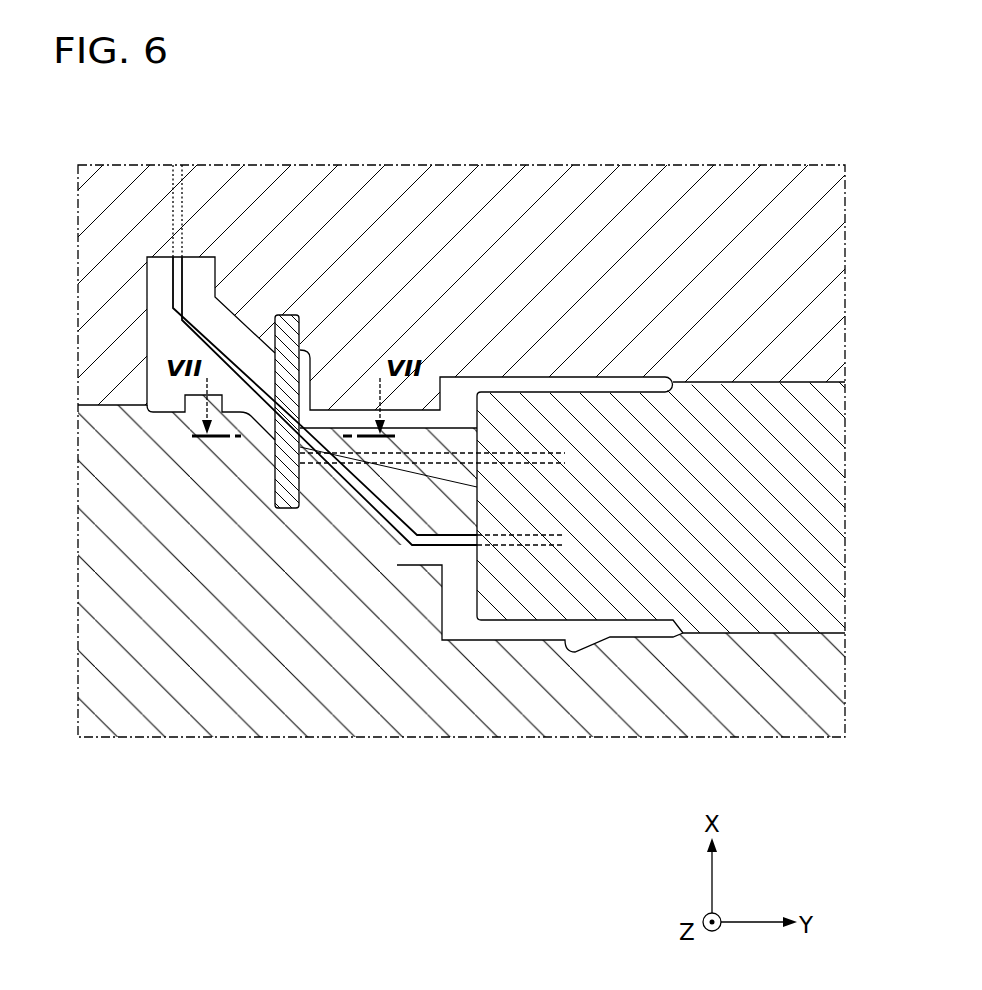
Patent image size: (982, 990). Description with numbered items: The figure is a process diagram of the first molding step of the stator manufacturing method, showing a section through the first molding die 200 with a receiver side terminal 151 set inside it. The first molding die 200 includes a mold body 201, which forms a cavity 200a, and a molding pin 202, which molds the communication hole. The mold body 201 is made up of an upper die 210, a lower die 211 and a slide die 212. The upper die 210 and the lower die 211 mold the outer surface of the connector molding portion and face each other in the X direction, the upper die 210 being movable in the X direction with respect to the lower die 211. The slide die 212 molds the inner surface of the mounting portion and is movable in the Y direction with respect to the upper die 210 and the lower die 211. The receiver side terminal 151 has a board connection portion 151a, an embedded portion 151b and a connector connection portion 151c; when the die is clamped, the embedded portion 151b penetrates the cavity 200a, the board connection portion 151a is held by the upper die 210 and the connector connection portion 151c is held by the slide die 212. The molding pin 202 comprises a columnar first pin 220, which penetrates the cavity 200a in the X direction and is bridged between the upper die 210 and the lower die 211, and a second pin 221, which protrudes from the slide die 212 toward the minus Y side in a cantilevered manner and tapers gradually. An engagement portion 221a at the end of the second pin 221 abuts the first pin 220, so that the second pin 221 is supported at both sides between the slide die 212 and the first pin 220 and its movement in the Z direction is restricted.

The receiver side terminal 151 is at (189, 284).
The board connection portion 151a is at (168, 197).
The embedded portion 151b is at (305, 447).
The connector connection portion 151c is at (540, 467).
The first molding die 200 is at (790, 142).
The cavity 200a is at (223, 337).
The mold body 201 is at (500, 483).
The molding pin 202 is at (425, 579).
The upper die 210 is at (438, 227).
The lower die 211 is at (360, 670).
The slide die 212 is at (780, 506).
The first pin 220 is at (278, 510).
The second pin 221 is at (408, 468).
The engagement portion 221a is at (275, 445).